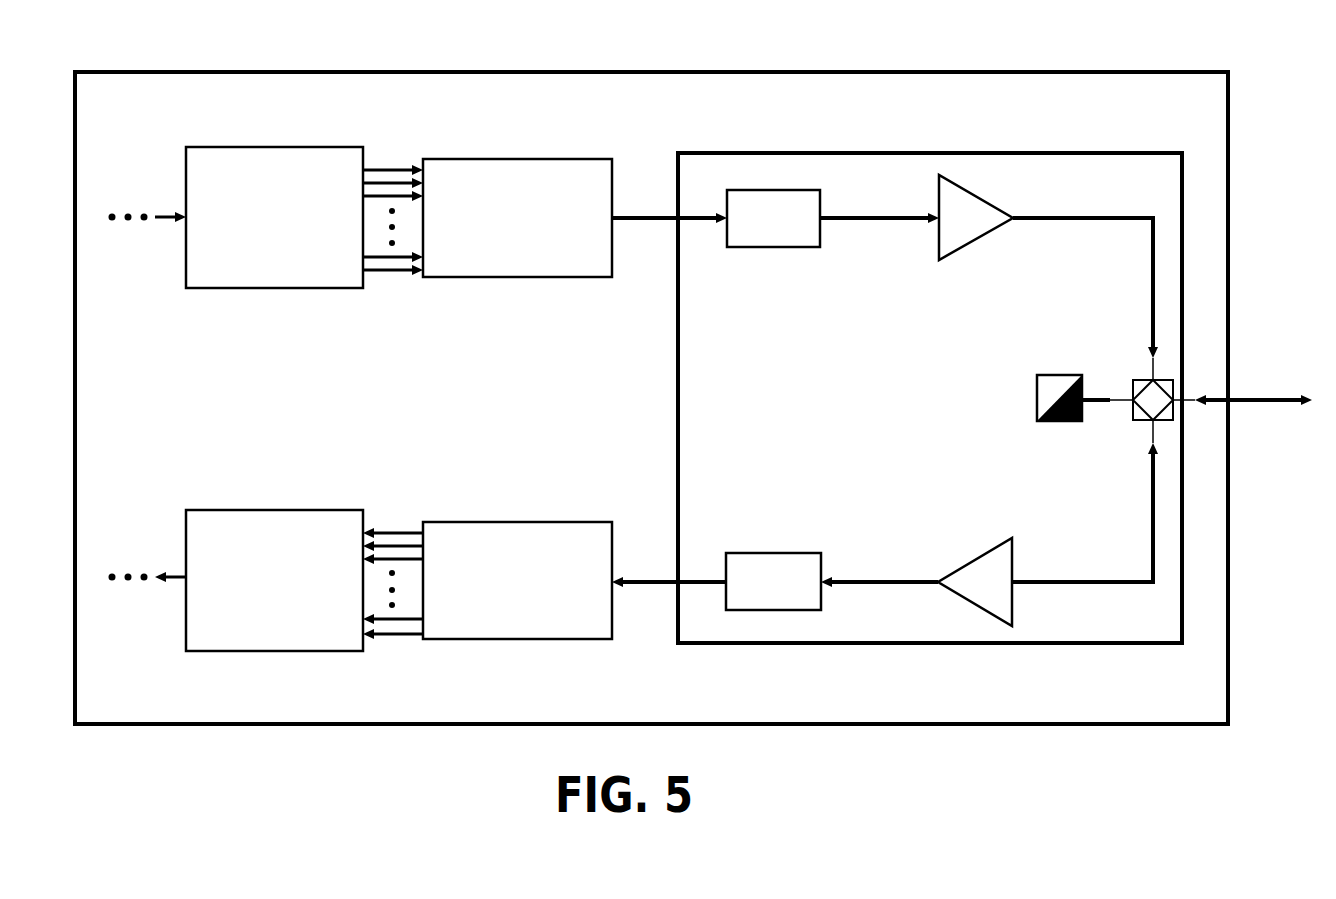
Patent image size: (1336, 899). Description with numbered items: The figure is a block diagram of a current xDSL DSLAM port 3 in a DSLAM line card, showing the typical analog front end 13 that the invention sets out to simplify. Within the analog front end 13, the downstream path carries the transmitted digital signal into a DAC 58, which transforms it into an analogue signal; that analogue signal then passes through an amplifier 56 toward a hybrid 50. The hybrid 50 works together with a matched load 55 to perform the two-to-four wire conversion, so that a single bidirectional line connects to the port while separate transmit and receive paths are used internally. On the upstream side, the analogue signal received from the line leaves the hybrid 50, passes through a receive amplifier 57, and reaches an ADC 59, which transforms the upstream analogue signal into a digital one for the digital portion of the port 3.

The xDSL DSLAM port 3 is at (741, 69).
The analog front end 13 is at (786, 149).
The hybrid 50 is at (1138, 377).
The matched load 55 is at (1030, 374).
The transmit amplifier 56 is at (936, 264).
The receive amplifier 57 is at (960, 558).
The DAC (Digital to Analog Converter) 58 is at (749, 253).
The ADC (Analog to Digital Converter) 59 is at (748, 548).